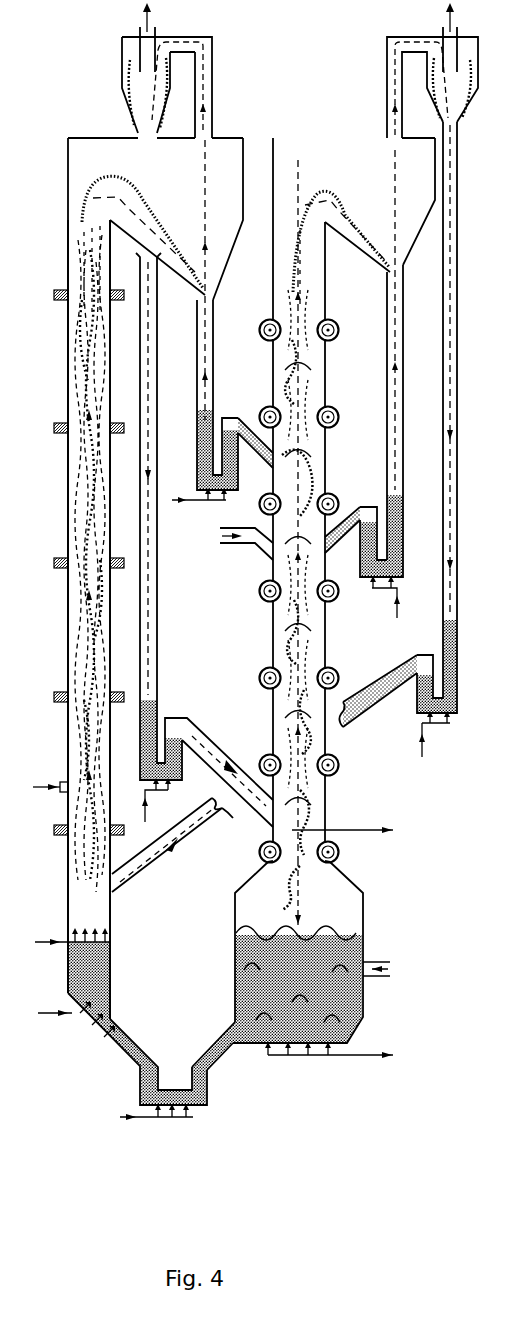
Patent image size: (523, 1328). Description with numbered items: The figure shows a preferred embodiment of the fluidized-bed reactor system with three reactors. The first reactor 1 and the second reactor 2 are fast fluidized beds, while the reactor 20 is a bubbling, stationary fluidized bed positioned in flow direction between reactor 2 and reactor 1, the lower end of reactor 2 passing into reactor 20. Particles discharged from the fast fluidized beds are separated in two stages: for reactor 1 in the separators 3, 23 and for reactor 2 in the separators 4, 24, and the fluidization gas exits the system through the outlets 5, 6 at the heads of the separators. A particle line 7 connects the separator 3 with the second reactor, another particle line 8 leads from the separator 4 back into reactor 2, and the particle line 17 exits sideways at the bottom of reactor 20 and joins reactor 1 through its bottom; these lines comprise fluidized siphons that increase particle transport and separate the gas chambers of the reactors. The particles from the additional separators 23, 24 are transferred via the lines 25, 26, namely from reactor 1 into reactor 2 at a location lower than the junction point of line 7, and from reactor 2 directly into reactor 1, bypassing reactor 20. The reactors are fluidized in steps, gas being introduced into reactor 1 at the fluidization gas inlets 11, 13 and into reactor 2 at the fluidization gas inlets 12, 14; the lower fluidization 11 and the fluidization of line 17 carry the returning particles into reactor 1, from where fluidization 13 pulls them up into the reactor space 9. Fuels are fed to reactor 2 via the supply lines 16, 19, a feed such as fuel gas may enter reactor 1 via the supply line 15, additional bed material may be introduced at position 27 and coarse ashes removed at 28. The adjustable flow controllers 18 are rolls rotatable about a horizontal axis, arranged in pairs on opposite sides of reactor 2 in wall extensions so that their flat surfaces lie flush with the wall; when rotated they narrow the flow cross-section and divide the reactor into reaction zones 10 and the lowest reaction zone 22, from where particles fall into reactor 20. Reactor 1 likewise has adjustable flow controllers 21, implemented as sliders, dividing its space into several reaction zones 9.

The first reactor 1 is at (67, 650).
The second reactor 2 is at (272, 637).
The particle separator 3 is at (228, 262).
The particle separator 4 is at (372, 250).
The outlet 5 is at (140, 24).
The outlet 6 is at (444, 26).
The particle line 7 is at (197, 480).
The particle line 8 is at (405, 573).
The reaction zones 9 is at (85, 415).
The reaction zones 10 is at (303, 480).
The fluidization gas inlet 11 is at (52, 1015).
The fluidization gas inlet 12 is at (372, 1052).
The fluidization gas inlet 13 is at (50, 945).
The fluidization gas inlet 14 is at (372, 830).
The supply line 15 is at (52, 790).
The supply line 16 is at (380, 962).
The particle line 17 is at (178, 1092).
The adjustable flow controllers 18 is at (333, 402).
The supply line 19 is at (253, 548).
The reactor 20 is at (234, 920).
The adjustable flow controllers 21 is at (58, 300).
The reaction zone 22 is at (317, 810).
The separator 23 is at (128, 100).
The separator 24 is at (435, 96).
The line 25 is at (145, 788).
The line 26 is at (416, 713).
The position for adding bed material 27 is at (263, 464).
The coarse ash removal 28 is at (236, 1028).